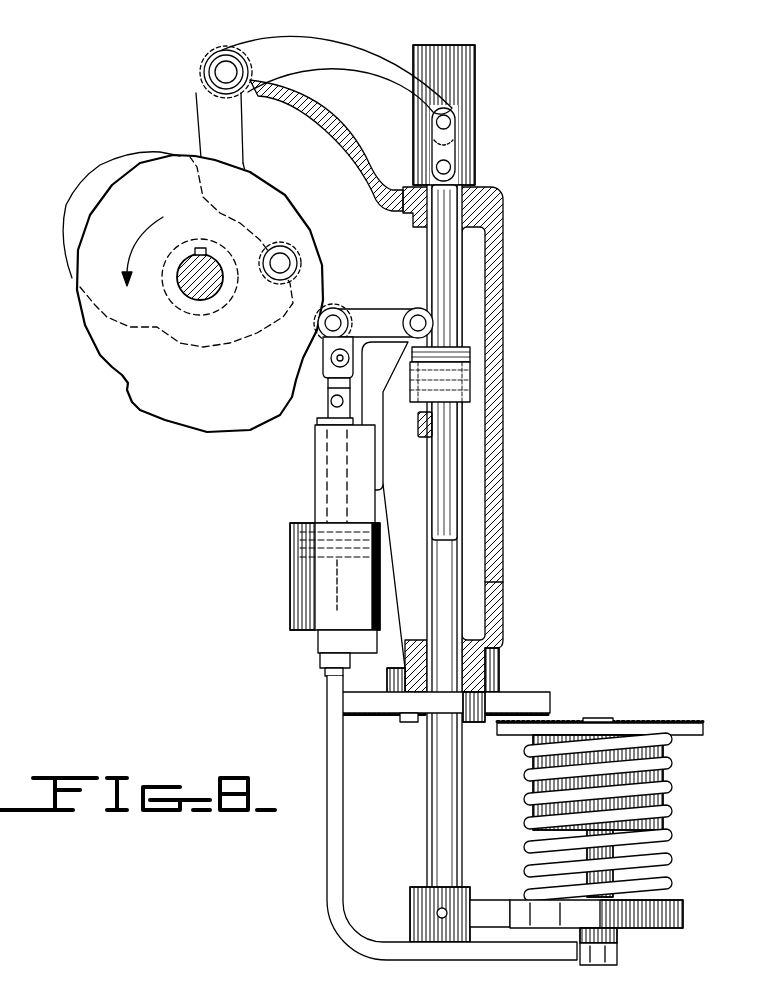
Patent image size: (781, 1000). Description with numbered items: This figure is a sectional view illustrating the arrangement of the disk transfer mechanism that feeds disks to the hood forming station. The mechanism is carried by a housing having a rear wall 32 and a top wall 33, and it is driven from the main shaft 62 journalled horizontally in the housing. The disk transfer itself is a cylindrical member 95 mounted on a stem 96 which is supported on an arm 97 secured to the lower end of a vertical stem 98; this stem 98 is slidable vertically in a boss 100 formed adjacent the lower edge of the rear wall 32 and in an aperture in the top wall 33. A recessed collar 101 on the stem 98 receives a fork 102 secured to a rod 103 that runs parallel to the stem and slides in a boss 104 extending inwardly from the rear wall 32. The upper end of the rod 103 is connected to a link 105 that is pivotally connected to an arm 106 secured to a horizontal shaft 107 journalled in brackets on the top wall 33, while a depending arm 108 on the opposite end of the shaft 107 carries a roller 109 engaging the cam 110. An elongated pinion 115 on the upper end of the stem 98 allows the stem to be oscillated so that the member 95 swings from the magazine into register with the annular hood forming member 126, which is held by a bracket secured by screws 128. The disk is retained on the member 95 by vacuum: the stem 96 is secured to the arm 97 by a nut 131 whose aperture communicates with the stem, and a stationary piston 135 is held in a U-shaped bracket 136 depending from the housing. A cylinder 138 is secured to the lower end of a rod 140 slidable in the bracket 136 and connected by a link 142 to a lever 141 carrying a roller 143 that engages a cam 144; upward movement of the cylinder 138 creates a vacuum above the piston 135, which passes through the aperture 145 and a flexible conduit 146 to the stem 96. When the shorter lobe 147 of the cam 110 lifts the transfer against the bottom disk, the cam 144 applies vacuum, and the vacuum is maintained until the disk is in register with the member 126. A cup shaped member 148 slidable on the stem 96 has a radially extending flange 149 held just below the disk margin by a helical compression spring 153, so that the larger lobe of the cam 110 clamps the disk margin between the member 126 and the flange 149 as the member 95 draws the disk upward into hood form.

The rear wall 32 is at (500, 505).
The top wall 33 is at (370, 176).
The shaft 62 is at (185, 282).
The cylindrical member 95 is at (650, 721).
The stem 96 is at (668, 846).
The arm 97 is at (685, 915).
The stem 98 is at (463, 808).
The boss 100 is at (407, 660).
The recessed collar 101 is at (478, 352).
The fork 102 is at (478, 380).
The rod 103 is at (442, 480).
The boss 104 is at (420, 428).
The link 105 is at (457, 140).
The arm 106 is at (333, 38).
The shaft 107 is at (220, 72).
The depending arm 108 is at (232, 135).
The roller 109 is at (300, 262).
The cam 110 is at (72, 187).
The elongated pinion 115 is at (476, 92).
The annular hood forming member 126 is at (552, 703).
The screws 128 is at (410, 723).
The nut 131 is at (618, 952).
The piston 135 is at (336, 571).
The U-shaped bracket 136 is at (316, 490).
The cylinder 138 is at (292, 600).
The rod 140 is at (330, 468).
The lever 141 is at (400, 323).
The link 142 is at (330, 378).
The roller 143 is at (339, 312).
The cam 144 is at (210, 432).
The aperture 145 is at (330, 626).
The flexible conduit 146 is at (344, 841).
The shorter lobe 147 is at (288, 317).
The cup shaped member 148 is at (663, 753).
The flange 149 is at (704, 733).
The helical compression spring 153 is at (672, 806).